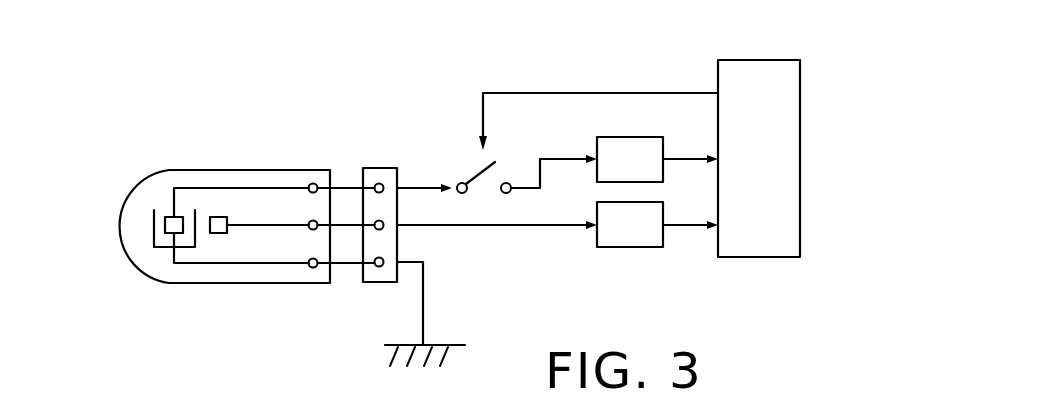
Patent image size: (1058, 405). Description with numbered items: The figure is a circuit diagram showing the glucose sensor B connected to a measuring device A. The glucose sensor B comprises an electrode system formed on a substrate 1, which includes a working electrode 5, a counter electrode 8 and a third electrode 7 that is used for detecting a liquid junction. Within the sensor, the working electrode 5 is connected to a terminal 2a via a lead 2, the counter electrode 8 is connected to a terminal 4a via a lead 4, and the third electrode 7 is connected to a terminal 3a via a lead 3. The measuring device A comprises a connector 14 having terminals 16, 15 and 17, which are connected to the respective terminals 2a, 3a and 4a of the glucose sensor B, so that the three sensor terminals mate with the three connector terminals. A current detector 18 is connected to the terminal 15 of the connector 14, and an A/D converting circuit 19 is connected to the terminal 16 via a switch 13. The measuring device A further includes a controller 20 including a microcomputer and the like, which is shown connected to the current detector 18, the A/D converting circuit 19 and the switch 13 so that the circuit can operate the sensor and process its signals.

The substrate 1 is at (168, 284).
The lead 2 is at (220, 187).
The lead 3 is at (267, 228).
The lead 4 is at (243, 265).
The working electrode 5 is at (171, 216).
The third electrode 7 is at (218, 234).
The counter electrode 8 is at (154, 226).
The terminal 2a is at (310, 184).
The terminal 3a is at (309, 223).
The terminal 4a is at (312, 268).
The switch 13 is at (480, 171).
The connector 14 is at (398, 173).
The terminal 15 is at (375, 223).
The terminal 16 is at (380, 184).
The terminal 17 is at (377, 268).
The current detector 18 is at (630, 248).
The A/D converting circuit 19 is at (618, 136).
The controller 20 is at (768, 258).
The measuring device A is at (540, 76).
The glucose sensor B is at (173, 170).